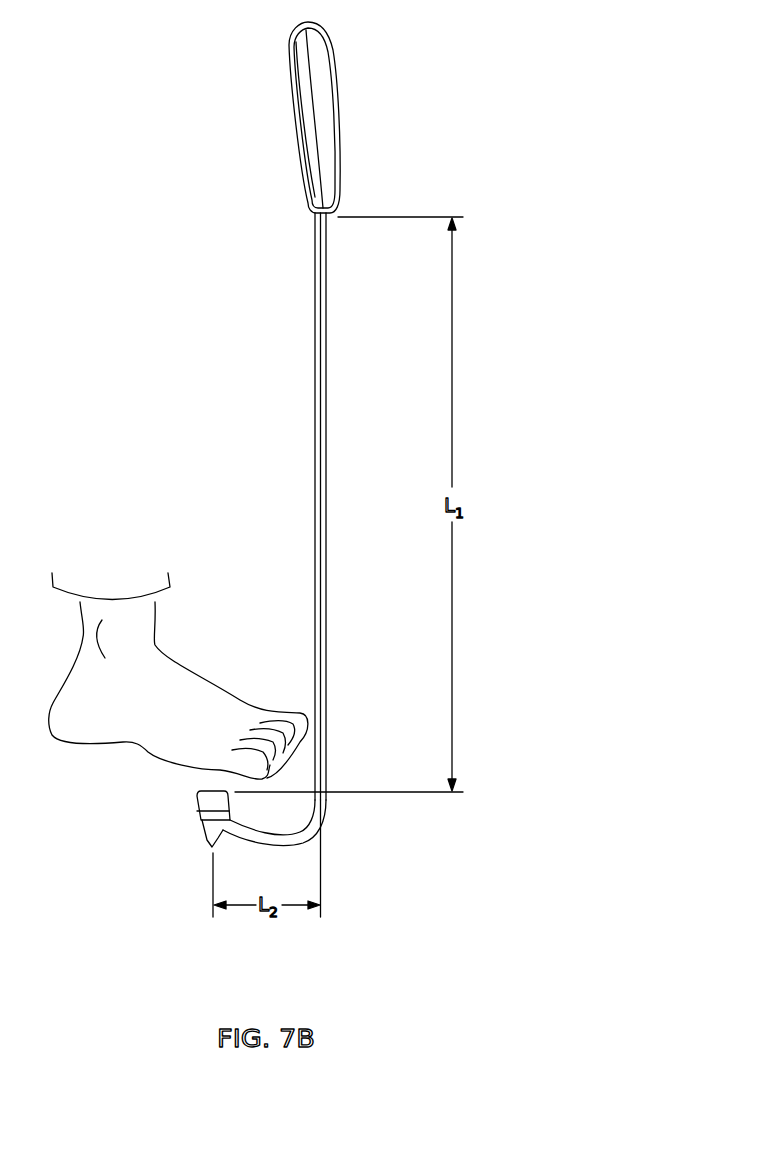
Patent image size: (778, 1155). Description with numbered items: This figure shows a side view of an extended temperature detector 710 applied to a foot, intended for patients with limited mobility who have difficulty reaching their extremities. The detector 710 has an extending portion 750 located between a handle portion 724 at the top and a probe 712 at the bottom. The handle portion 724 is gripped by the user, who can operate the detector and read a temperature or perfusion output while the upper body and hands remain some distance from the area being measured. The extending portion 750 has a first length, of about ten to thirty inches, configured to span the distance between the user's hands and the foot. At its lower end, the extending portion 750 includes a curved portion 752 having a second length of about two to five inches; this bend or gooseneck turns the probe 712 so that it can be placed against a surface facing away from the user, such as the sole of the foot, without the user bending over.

The temperature detector 710 is at (216, 139).
The handle portion 724 is at (341, 108).
The extending portion 750 is at (315, 415).
The curved portion 752 is at (279, 844).
The probe 712 is at (196, 802).